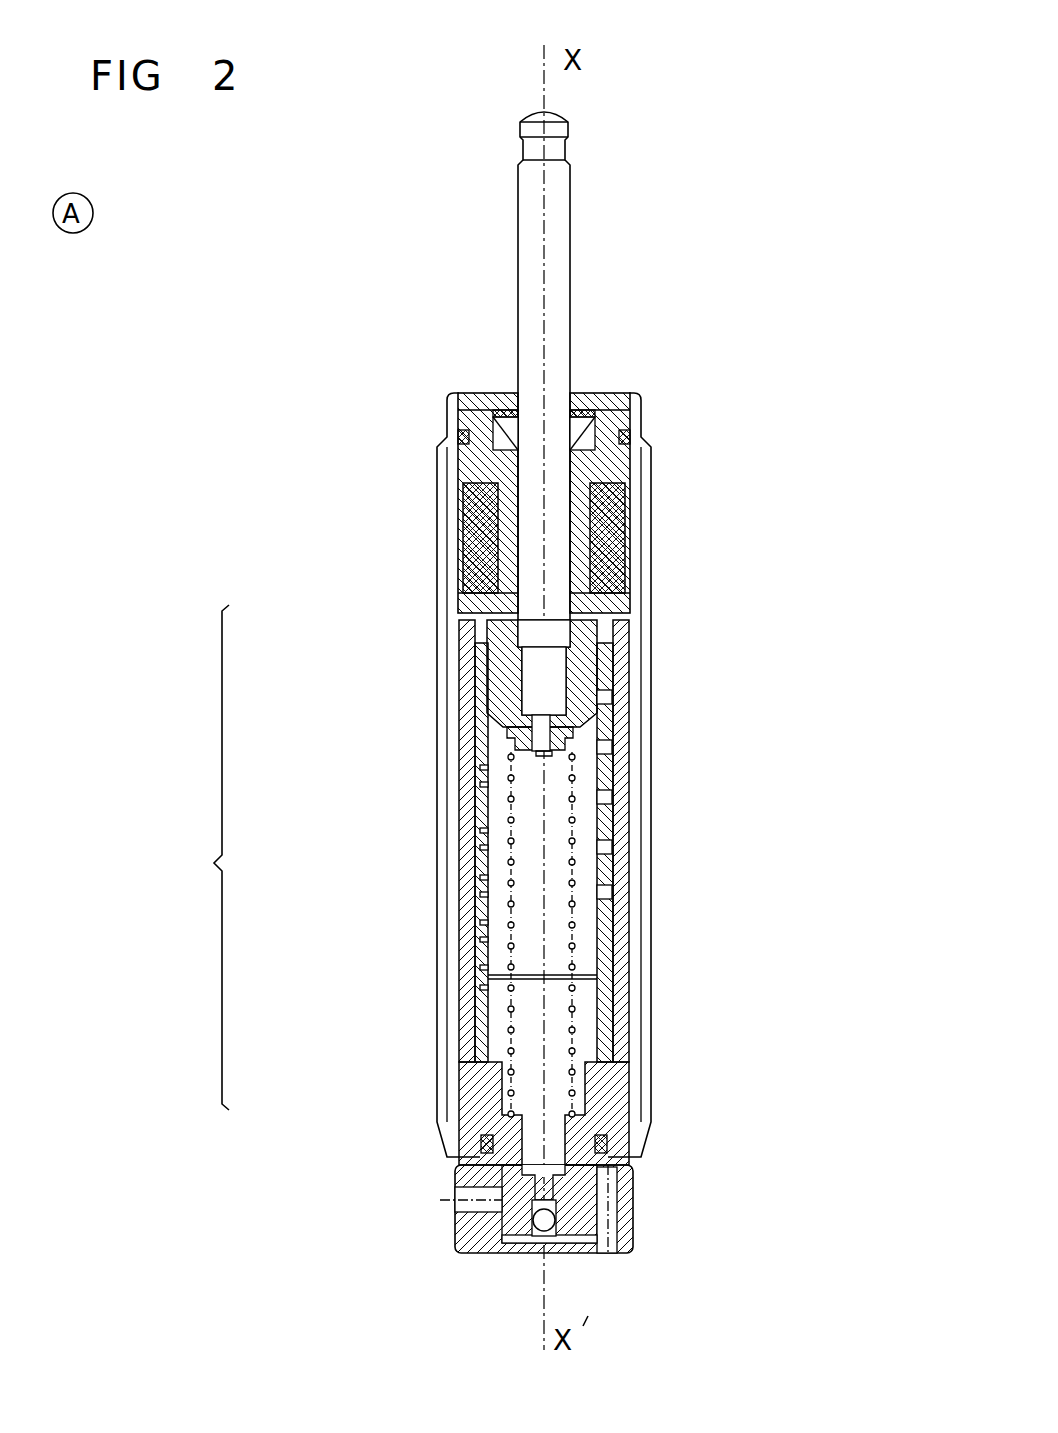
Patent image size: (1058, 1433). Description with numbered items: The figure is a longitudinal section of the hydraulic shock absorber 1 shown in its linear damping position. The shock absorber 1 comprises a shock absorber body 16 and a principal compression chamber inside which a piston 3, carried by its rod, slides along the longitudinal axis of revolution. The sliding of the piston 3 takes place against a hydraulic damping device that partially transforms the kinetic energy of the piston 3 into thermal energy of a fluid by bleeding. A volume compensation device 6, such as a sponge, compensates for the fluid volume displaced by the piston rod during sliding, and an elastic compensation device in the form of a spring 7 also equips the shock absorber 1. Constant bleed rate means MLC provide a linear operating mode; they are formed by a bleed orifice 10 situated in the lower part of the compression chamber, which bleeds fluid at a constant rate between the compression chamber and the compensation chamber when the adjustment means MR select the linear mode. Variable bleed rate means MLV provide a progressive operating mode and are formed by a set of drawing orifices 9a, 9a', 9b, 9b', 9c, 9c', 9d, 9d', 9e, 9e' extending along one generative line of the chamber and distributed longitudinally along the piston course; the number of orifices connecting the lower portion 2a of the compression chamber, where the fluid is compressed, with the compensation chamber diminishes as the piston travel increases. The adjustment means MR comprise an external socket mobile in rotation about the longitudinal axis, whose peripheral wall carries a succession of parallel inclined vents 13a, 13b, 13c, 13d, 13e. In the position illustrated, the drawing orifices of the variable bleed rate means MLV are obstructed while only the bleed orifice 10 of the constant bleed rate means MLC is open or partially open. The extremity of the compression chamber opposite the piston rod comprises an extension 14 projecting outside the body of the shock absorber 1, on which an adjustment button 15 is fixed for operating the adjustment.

The shock absorber 1 is at (716, 116).
The lower portion of the compression chamber 2a is at (605, 977).
The piston 3 is at (588, 672).
The volume compensation device 6 is at (462, 525).
The spring 7 is at (578, 832).
The drawing orifice 9a is at (408, 713).
The drawing orifice 9a' is at (389, 737).
The drawing orifice 9b is at (367, 790).
The drawing orifice 9b' is at (369, 833).
The drawing orifice 9c is at (389, 883).
The drawing orifice 9c' is at (393, 916).
The drawing orifice 9d is at (375, 956).
The drawing orifice 9d' is at (380, 982).
The drawing orifice 9e is at (405, 1011).
The drawing orifice 9e' is at (428, 1034).
The bleed orifice 10 is at (617, 937).
The vent 13a is at (615, 697).
The vent 13b is at (615, 747).
The vent 13c is at (615, 797).
The vent 13d is at (615, 847).
The vent 13e is at (615, 892).
The extension 14 is at (567, 1207).
The adjustment button 15 is at (478, 1233).
The shock absorber body 16 is at (650, 519).
The variable bleed rate means MLV is at (206, 860).
The constant bleed rate means MLC is at (588, 946).
The adjustment means MR is at (402, 1241).